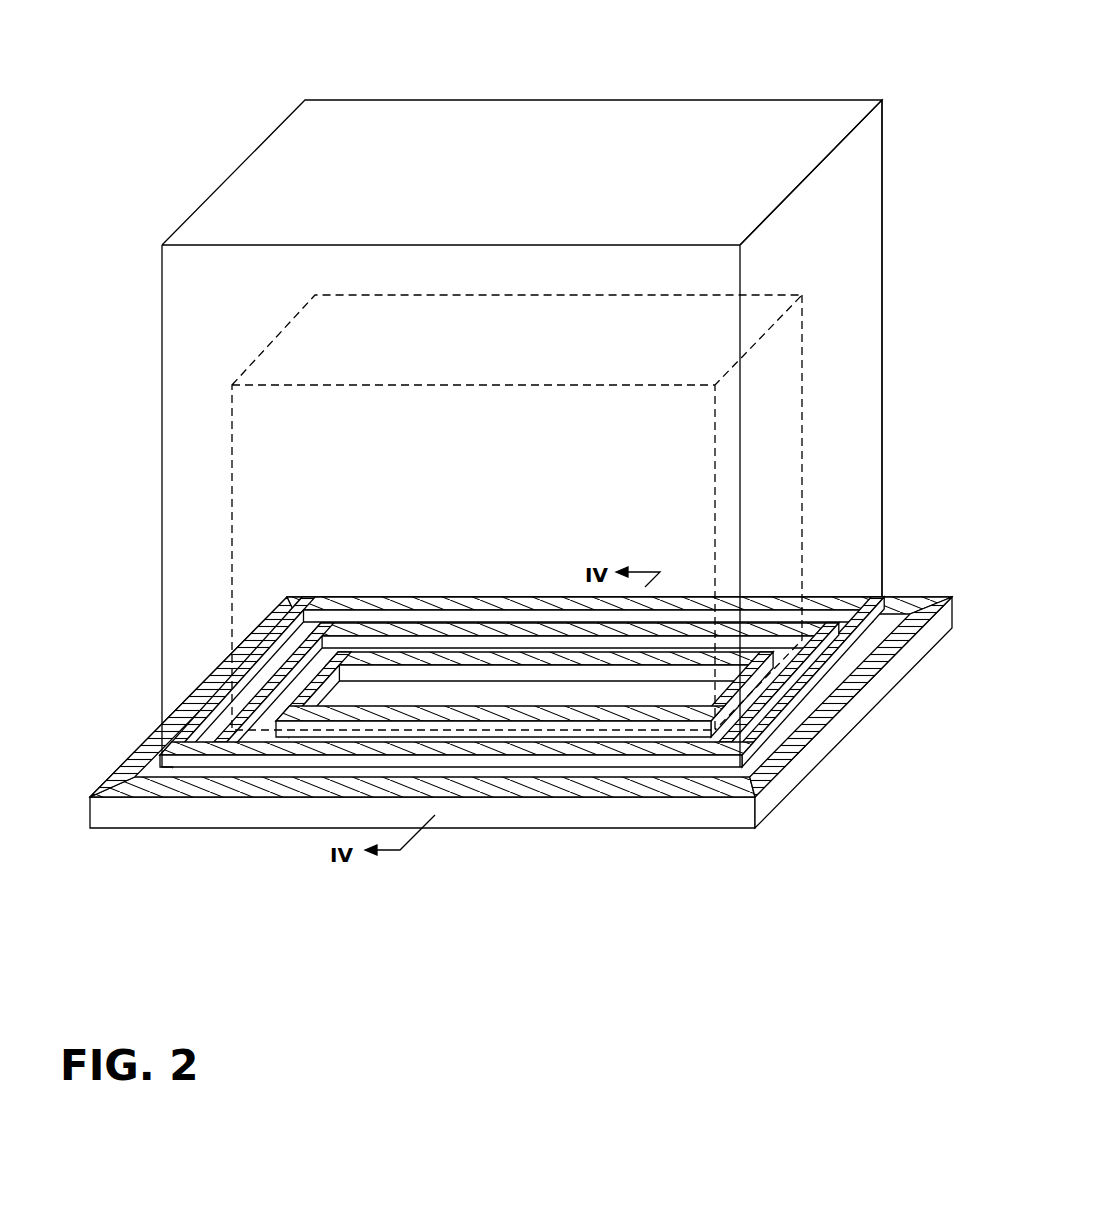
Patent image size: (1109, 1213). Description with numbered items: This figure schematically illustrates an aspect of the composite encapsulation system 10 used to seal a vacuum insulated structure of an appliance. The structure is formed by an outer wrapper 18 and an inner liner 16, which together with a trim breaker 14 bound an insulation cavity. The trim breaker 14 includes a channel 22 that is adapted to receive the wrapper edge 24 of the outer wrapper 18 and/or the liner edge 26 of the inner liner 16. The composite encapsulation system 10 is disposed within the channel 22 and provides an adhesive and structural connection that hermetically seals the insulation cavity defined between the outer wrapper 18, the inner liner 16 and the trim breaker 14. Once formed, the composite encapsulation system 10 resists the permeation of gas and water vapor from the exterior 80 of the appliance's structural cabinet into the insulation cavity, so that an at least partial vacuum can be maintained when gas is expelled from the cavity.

The composite encapsulation system 10 is at (503, 466).
The trim breaker 14 is at (148, 830).
The inner liner 16 is at (775, 410).
The outer wrapper 18 is at (773, 122).
The channel 22 is at (823, 687).
The wrapper edge 24 is at (800, 728).
The liner edge 26 is at (330, 745).
The exterior 80 is at (822, 202).